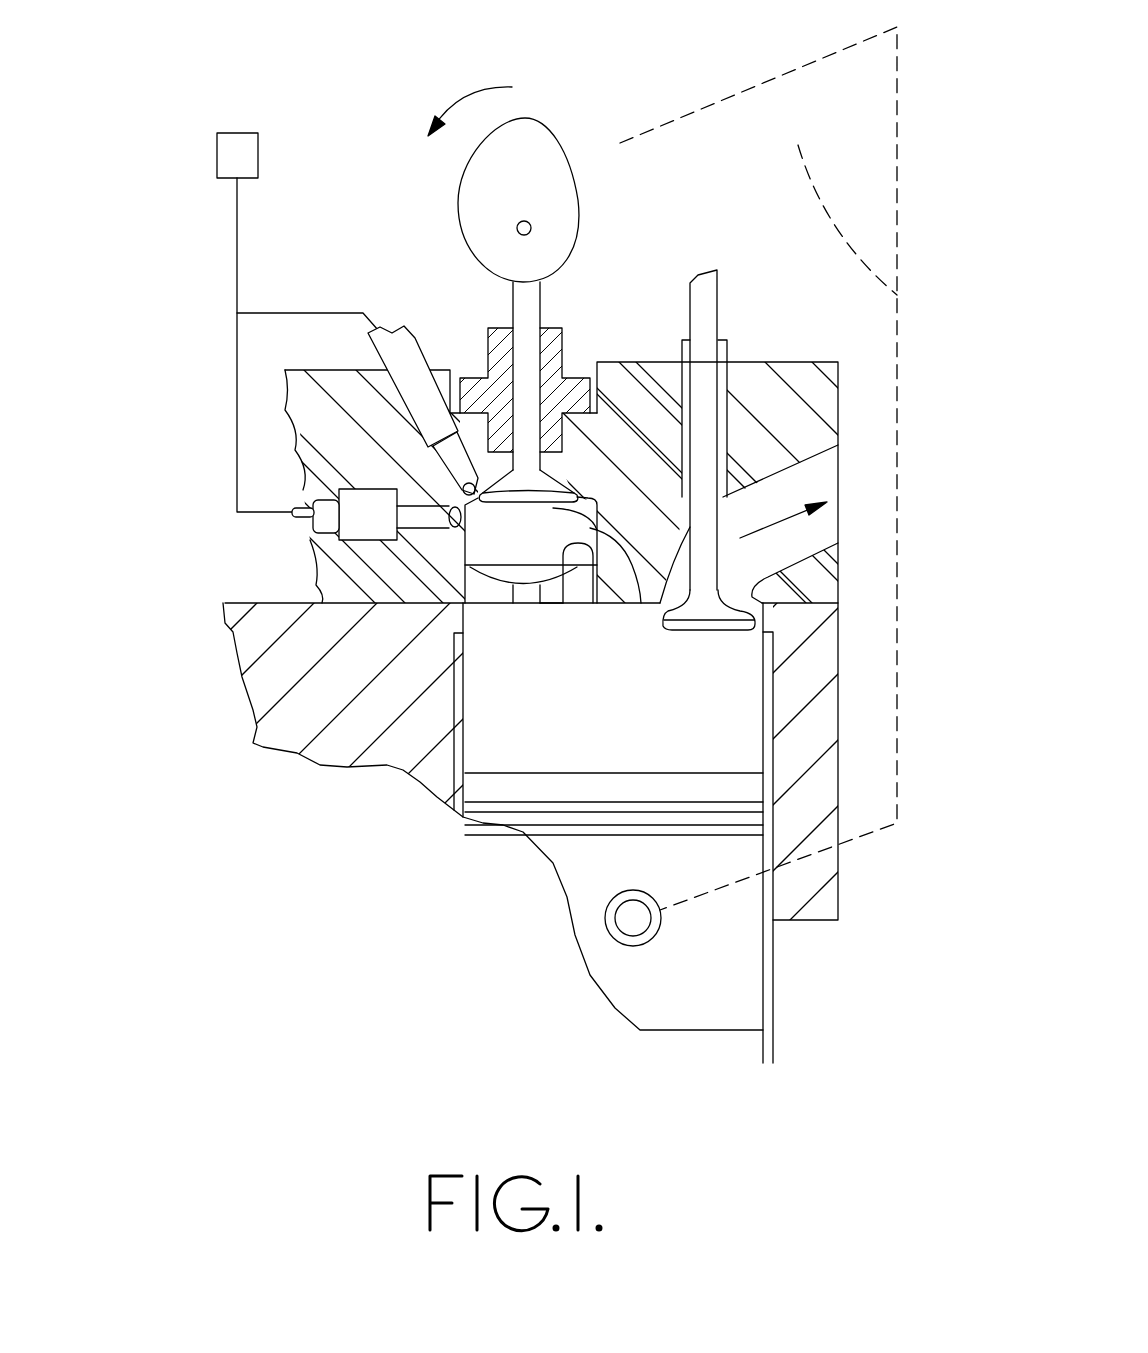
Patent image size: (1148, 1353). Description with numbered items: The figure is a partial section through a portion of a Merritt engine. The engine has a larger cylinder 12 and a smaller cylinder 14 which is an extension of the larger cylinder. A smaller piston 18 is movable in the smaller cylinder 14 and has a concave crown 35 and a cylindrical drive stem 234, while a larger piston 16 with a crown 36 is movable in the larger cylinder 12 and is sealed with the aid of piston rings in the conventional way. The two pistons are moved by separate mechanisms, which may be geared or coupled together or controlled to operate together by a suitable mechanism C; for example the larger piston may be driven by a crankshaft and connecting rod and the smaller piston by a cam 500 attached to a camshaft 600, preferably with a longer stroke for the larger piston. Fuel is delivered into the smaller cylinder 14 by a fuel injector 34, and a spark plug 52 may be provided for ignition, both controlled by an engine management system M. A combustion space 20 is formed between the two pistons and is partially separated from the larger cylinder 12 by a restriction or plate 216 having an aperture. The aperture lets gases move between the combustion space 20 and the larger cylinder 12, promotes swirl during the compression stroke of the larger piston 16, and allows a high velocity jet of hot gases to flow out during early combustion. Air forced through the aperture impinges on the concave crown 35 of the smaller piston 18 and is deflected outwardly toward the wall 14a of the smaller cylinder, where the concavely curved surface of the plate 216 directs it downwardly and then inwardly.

The larger cylinder 12 is at (640, 748).
The smaller cylinder 14 is at (510, 543).
The wall of the smaller cylinder 14a is at (560, 585).
The larger piston 16 is at (730, 955).
The smaller piston 18 is at (580, 467).
The combustion space 20 is at (511, 635).
The fuel injector 34 is at (387, 328).
The crown of the smaller piston 35 is at (512, 512).
The crown of the larger piston 36 is at (708, 775).
The spark plug 52 is at (353, 512).
The restriction or plate 216 is at (455, 642).
The cylindrical drive stem 234 is at (523, 302).
The cam 500 is at (460, 188).
The camshaft 600 is at (524, 221).
The engine management system M is at (233, 165).
The mechanism C is at (758, 468).